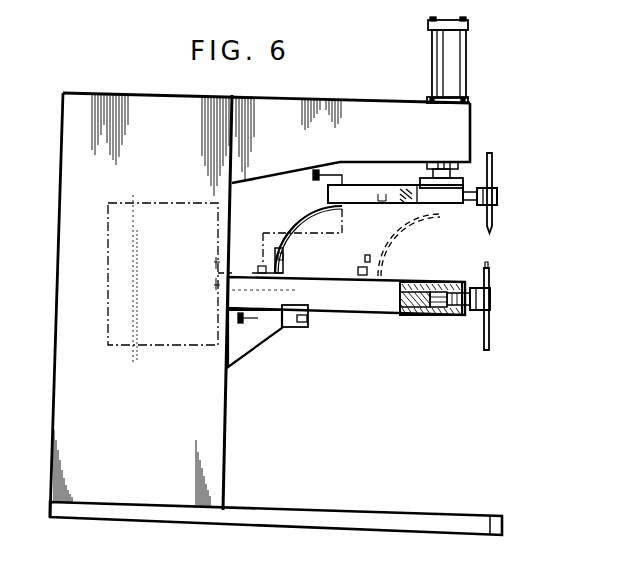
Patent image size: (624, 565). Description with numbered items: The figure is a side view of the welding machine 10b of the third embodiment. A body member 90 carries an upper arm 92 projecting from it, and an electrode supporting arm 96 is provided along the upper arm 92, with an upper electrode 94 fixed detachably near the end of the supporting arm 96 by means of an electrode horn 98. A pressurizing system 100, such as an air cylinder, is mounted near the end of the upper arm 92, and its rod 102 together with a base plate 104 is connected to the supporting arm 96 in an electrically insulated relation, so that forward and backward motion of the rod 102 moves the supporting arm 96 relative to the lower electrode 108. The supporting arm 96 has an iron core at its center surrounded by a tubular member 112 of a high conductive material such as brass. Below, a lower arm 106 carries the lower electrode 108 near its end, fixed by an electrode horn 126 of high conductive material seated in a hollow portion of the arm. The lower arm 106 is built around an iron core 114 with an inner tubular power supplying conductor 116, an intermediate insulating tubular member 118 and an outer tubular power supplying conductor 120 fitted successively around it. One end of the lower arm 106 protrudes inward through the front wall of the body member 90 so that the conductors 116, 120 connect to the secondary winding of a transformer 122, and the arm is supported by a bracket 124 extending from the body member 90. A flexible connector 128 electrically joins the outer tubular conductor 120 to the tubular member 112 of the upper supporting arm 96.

The welding machine 10b is at (518, 115).
The body member 90 is at (149, 108).
The upper arm 92 is at (334, 110).
The upper electrode 94 is at (492, 224).
The electrode supporting arm 96 is at (374, 204).
The electrode horn 98 is at (497, 200).
The pressurizing system 100 is at (452, 62).
The rod 102 is at (458, 171).
The base plate 104 is at (464, 182).
The lower arm 106 is at (348, 316).
The lower electrode 108 is at (490, 292).
The tubular member 112 is at (390, 186).
The iron core 114 is at (405, 309).
The inner tubular power supplying conductor 116 is at (405, 282).
The intermediate insulating tubular member 118 is at (441, 292).
The outer tubular power supplying conductor 120 is at (431, 316).
The transformer 122 is at (118, 268).
The bracket 124 is at (262, 344).
The electrode horn 126 is at (491, 303).
The flexible connector 128 is at (285, 238).